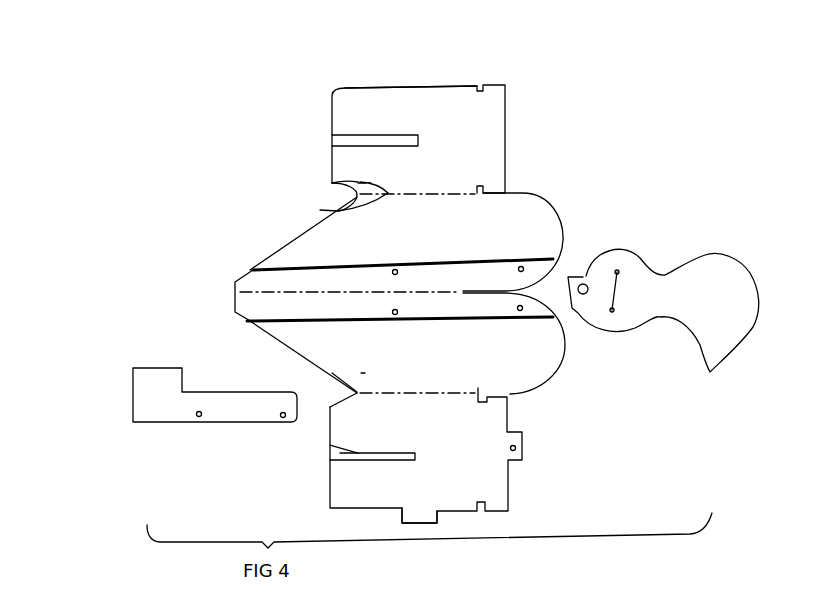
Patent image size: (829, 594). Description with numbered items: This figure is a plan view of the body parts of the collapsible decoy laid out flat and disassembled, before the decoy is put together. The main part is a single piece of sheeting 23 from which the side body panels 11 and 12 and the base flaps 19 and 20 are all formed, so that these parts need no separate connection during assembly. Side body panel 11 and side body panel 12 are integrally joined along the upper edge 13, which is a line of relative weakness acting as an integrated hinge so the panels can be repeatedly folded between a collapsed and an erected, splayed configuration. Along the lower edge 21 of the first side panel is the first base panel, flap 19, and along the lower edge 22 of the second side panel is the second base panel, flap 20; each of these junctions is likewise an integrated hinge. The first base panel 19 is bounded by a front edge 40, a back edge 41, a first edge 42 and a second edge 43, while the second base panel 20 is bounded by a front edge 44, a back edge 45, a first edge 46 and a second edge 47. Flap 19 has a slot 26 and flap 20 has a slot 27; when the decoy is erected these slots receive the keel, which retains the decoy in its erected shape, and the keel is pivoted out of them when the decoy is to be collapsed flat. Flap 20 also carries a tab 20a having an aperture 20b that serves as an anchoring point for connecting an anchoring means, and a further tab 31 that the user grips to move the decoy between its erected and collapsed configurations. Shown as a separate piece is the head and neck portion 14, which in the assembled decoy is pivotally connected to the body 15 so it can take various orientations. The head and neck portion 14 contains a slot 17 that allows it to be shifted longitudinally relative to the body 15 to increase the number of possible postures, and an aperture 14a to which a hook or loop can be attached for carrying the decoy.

The side body panel 11 is at (530, 210).
The side body panel 12 is at (545, 355).
The upper edge 13 is at (273, 291).
The head and neck portion 14 is at (657, 312).
The aperture 14a is at (583, 283).
The body 15 is at (515, 377).
The slot 17 is at (639, 268).
The flap 19 is at (482, 110).
The flap 20 is at (490, 482).
The tab 20a is at (522, 457).
The aperture 20b is at (517, 445).
The lower edge 21 is at (330, 184).
The lower edge 22 is at (330, 372).
The sheeting 23 is at (338, 232).
The slot 26 is at (367, 145).
The slot 27 is at (377, 460).
The tab 31 is at (430, 512).
The front edge 40 is at (505, 148).
The back edge 41 is at (332, 113).
The first edge 42 is at (338, 211).
The second edge 43 is at (433, 86).
The front edge 44 is at (508, 500).
The back edge 45 is at (330, 503).
The first edge 46 is at (363, 373).
The second edge 47 is at (353, 512).